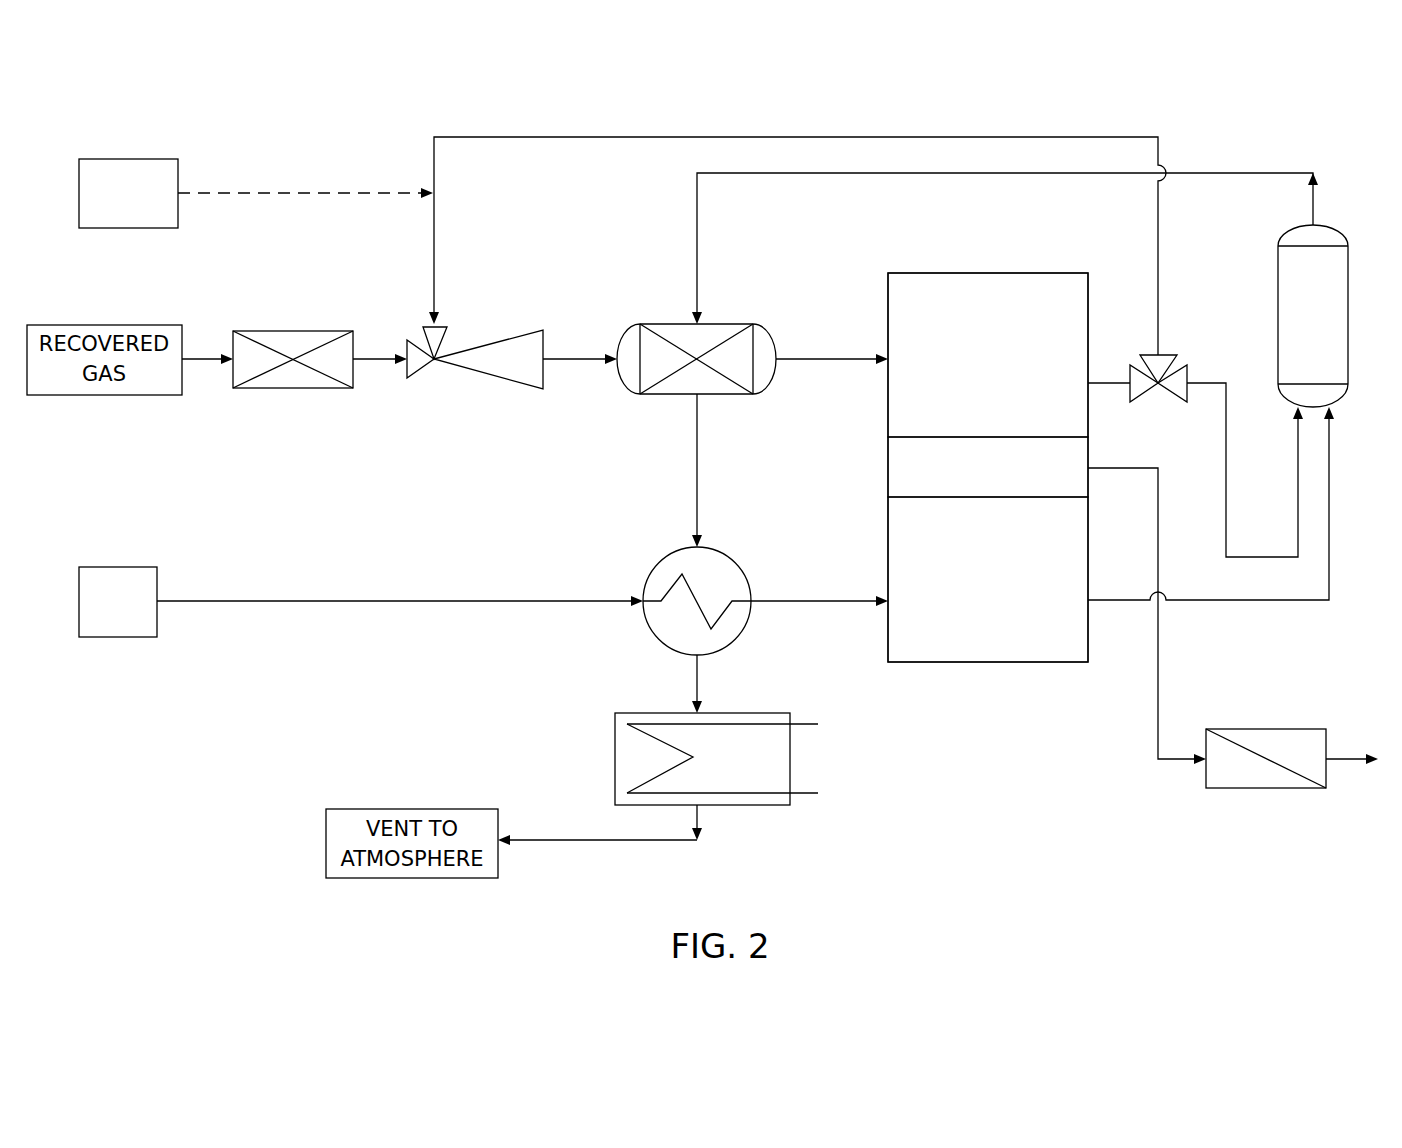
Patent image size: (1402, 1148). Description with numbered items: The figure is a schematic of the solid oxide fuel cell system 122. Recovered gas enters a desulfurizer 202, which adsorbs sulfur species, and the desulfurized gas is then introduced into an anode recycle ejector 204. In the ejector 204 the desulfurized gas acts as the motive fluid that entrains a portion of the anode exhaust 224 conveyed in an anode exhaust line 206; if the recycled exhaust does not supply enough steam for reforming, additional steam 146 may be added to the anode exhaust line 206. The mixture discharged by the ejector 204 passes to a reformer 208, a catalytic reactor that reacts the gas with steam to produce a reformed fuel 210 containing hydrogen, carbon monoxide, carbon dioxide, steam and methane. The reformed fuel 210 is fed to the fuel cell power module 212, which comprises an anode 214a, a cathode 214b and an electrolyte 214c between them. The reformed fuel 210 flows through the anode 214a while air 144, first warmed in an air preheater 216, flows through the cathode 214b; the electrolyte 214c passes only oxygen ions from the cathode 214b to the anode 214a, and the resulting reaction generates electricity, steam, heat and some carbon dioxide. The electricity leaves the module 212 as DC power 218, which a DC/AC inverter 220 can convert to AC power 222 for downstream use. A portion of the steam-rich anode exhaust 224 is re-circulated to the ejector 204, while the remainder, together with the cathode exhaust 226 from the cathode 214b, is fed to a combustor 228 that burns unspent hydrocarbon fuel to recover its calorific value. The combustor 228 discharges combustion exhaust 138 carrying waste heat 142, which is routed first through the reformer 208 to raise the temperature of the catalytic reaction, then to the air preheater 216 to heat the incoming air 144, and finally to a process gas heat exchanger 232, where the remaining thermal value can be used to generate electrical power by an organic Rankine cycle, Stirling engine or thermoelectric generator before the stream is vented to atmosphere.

The solid oxide fuel cell system 122 is at (189, 67).
The steam 146 is at (256, 193).
The air 144 is at (361, 602).
The desulfurizer 202 is at (293, 331).
The anode recycle ejector 204 is at (471, 378).
The anode exhaust line 206 is at (434, 265).
The reformer 208 is at (648, 394).
The reformed fuel 210 is at (830, 358).
The fuel cell power module 212 is at (960, 444).
The anode 214a is at (988, 355).
The cathode 214b is at (988, 579).
The electrolyte 214c is at (988, 467).
The air preheater 216 is at (745, 568).
The DC power 218 is at (1158, 512).
The DC/AC inverter 220 is at (1263, 729).
The AC power 222 is at (1345, 760).
The anode exhaust 224 is at (1113, 383).
The cathode exhaust 226 is at (1117, 600).
The combustor 228 is at (1313, 316).
The process gas heat exchanger 232 is at (770, 713).
The combustion exhaust 138 is at (1012, 335).
The waste heat 142 is at (1232, 173).